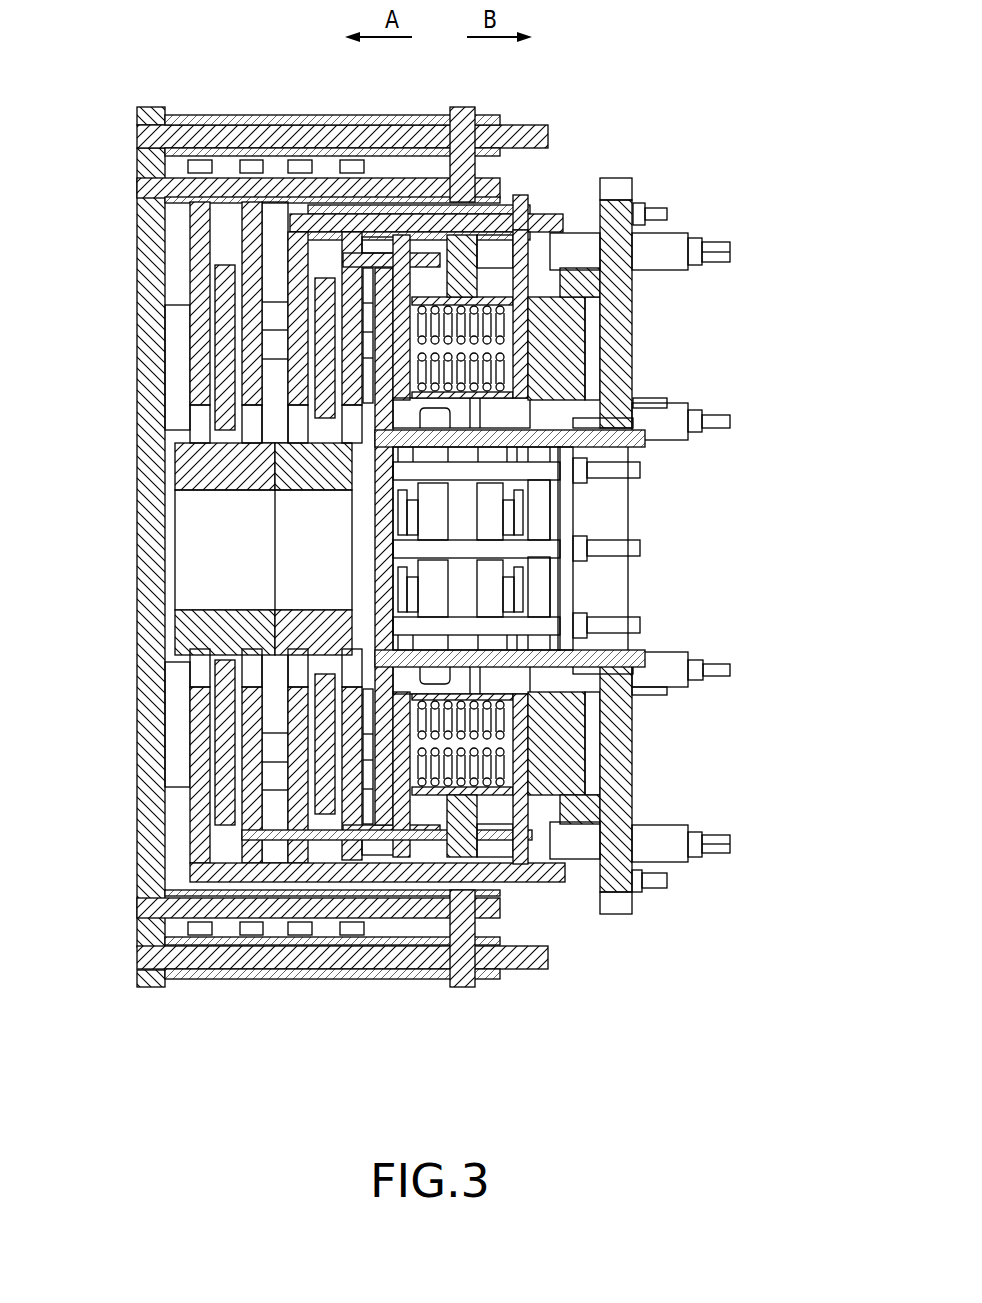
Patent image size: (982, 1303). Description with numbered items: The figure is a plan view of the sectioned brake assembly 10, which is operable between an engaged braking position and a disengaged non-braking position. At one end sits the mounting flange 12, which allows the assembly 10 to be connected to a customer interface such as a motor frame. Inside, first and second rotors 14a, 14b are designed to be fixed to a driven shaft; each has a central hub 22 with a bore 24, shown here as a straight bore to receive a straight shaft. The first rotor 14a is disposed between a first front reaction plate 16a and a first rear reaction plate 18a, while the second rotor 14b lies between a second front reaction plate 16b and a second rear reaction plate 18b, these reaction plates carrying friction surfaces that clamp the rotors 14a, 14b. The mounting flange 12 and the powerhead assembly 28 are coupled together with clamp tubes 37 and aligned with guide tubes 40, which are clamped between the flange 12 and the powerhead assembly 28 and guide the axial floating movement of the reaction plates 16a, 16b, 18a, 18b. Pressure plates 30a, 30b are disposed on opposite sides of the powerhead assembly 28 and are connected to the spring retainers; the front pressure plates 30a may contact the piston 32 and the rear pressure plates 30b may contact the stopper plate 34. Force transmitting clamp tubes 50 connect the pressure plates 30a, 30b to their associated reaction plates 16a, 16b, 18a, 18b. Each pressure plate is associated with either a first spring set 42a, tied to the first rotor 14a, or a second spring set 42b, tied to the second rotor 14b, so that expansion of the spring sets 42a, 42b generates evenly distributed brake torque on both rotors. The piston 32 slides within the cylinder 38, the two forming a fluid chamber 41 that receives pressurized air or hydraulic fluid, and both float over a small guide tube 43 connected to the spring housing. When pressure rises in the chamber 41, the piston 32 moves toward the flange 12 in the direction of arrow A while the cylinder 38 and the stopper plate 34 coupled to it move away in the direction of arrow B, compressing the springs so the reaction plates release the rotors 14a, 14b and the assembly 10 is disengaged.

The assembly 10 is at (748, 180).
The mounting flange 12 is at (142, 335).
The first rotor 14a is at (352, 805).
The second rotor 14b is at (220, 807).
The first front reaction plate 16a is at (300, 805).
The second front reaction plate 16b is at (255, 236).
The first rear reaction plate 18a is at (293, 808).
The second rear reaction plate 18b is at (186, 266).
The central hub 22 is at (185, 640).
The bore 24 is at (186, 543).
The powerhead assembly 28 is at (472, 108).
The front pressure plate 30a is at (525, 202).
The rear pressure plate 30b is at (400, 760).
The piston 32 is at (578, 378).
The stopper plate 34 is at (430, 825).
The clamp tubes 37 is at (182, 120).
The cylinder 38 is at (617, 318).
The guide tubes 40 is at (236, 176).
The fluid chamber 41 is at (596, 747).
The first spring sets 42a is at (500, 318).
The second spring sets 42b is at (490, 712).
The small guide tube 43 is at (668, 258).
The force transmitting clamp tubes 50 is at (387, 248).